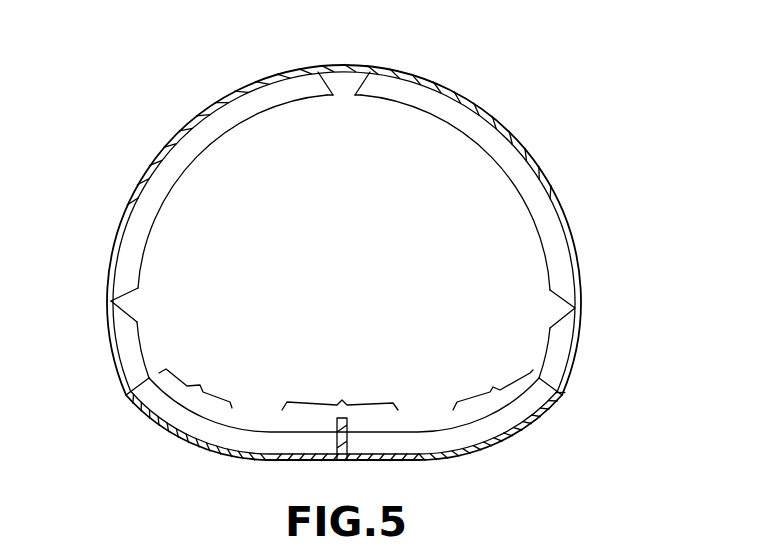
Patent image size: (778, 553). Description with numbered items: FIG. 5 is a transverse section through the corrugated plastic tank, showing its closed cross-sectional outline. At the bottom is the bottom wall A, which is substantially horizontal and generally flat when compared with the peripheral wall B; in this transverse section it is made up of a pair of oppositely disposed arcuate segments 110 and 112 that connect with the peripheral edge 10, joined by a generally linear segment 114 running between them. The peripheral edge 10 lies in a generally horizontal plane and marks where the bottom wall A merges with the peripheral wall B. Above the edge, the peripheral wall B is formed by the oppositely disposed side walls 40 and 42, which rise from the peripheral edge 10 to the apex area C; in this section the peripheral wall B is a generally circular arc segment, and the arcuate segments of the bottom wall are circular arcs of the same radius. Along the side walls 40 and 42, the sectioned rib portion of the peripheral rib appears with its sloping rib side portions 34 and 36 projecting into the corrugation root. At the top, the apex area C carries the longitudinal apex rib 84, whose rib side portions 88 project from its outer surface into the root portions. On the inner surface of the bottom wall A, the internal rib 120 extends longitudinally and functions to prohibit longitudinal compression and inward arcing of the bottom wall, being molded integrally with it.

The peripheral edge 10 is at (113, 403).
The rib side portion 34 is at (113, 298).
The rib side portion 36 is at (113, 305).
The side wall 40 is at (120, 201).
The side wall 42 is at (580, 205).
The apex rib 84 is at (322, 70).
The rib side portion 88 is at (368, 70).
The arcuate segment 110 is at (493, 385).
The arcuate segment 112 is at (195, 381).
The linear segment 114 is at (340, 391).
The rib 120 is at (348, 432).
The bottom wall A is at (330, 469).
The peripheral wall B is at (154, 143).
The apex area C is at (350, 54).